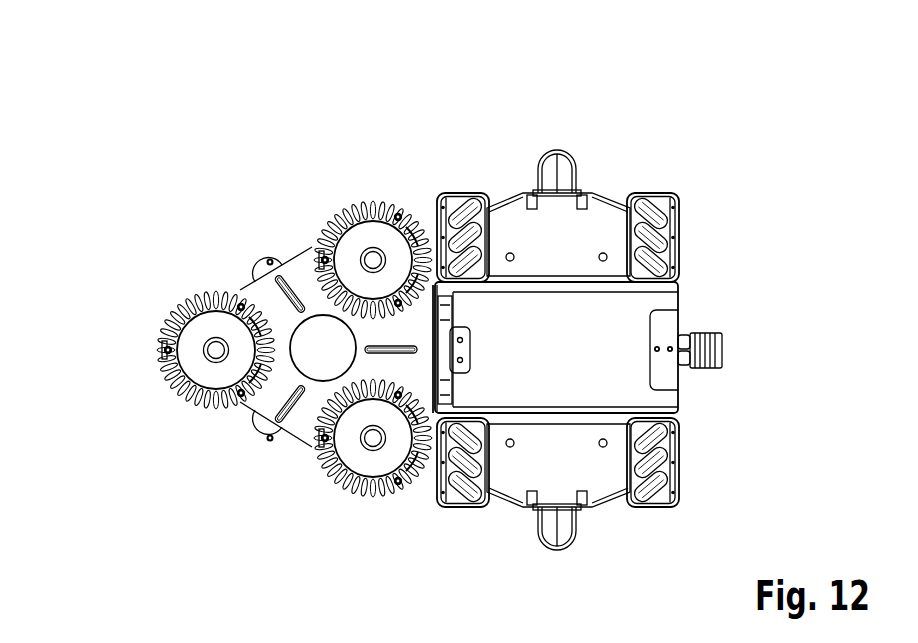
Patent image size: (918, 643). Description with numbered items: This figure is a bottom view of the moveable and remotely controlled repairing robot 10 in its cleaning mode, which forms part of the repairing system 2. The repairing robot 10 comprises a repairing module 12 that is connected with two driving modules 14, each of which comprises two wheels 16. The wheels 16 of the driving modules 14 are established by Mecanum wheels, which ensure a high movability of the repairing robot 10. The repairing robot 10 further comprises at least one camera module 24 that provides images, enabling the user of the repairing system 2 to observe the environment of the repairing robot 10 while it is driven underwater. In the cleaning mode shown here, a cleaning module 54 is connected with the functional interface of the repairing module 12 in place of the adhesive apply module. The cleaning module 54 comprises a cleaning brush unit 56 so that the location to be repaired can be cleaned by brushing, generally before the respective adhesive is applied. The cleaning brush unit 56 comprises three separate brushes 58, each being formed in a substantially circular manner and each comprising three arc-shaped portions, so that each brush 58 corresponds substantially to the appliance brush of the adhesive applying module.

The repairing system 2 is at (426, 113).
The repairing robot 10 is at (520, 120).
The repairing module 12 is at (665, 301).
The driving module 14 is at (603, 222).
The wheel 16 is at (672, 243).
The camera module 24 is at (564, 142).
The cleaning module 54 is at (143, 323).
The cleaning brush unit 56 is at (256, 449).
The brush 58 is at (345, 205).